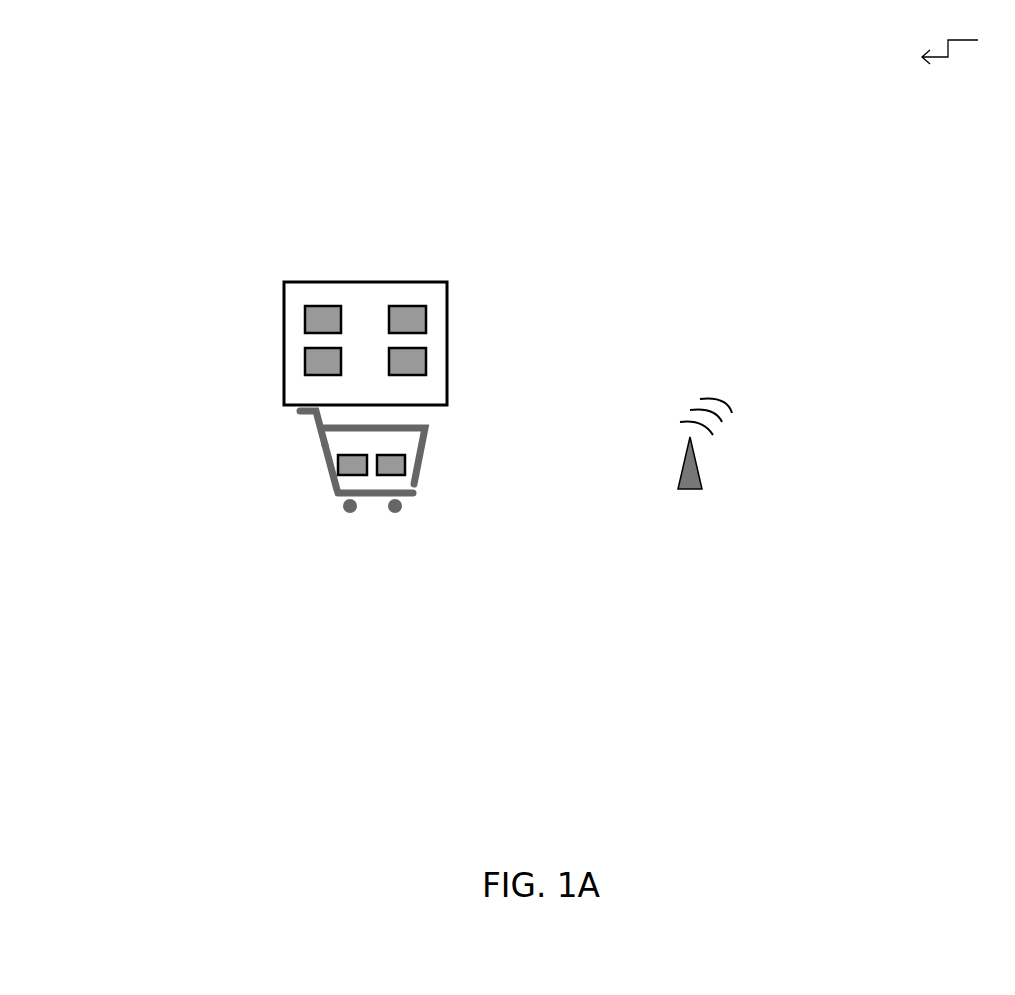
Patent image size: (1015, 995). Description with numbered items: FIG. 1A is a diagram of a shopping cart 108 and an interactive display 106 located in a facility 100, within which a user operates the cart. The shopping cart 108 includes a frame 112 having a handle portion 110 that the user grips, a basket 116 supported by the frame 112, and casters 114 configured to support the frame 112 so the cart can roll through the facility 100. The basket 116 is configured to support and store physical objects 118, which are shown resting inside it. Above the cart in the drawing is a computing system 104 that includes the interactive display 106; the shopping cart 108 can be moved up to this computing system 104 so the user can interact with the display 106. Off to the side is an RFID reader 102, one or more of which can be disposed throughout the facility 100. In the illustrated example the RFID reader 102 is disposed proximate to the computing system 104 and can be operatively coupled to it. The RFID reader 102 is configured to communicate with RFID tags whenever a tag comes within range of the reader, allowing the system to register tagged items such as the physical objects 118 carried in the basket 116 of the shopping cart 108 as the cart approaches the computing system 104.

The facility 100 is at (968, 47).
The RFID reader 102 is at (695, 462).
The computing system 104 is at (447, 308).
The interactive display 106 is at (427, 360).
The shopping cart 108 is at (323, 455).
The handle portion 110 is at (300, 413).
The frame 112 is at (340, 488).
The casters 114 is at (423, 498).
The basket 116 is at (425, 448).
The physical objects 118 is at (350, 480).